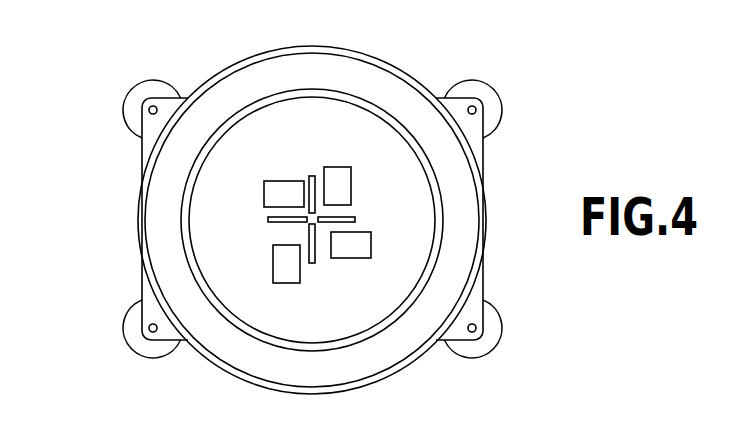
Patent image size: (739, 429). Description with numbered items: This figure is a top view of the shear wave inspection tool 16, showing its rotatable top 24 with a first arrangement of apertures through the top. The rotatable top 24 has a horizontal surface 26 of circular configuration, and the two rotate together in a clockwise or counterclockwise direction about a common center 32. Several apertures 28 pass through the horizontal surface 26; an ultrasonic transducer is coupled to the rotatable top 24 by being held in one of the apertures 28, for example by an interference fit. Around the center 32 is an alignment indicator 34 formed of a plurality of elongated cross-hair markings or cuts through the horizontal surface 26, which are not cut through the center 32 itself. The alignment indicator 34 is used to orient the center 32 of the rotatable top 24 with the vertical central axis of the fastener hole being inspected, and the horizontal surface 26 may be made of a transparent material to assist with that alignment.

The shear wave inspection tool 16 is at (140, 162).
The rotatable top 24 is at (370, 88).
The horizontal surface 26 is at (313, 150).
The apertures 28 is at (350, 248).
The center 32 is at (312, 220).
The alignment indicator 34 is at (268, 219).